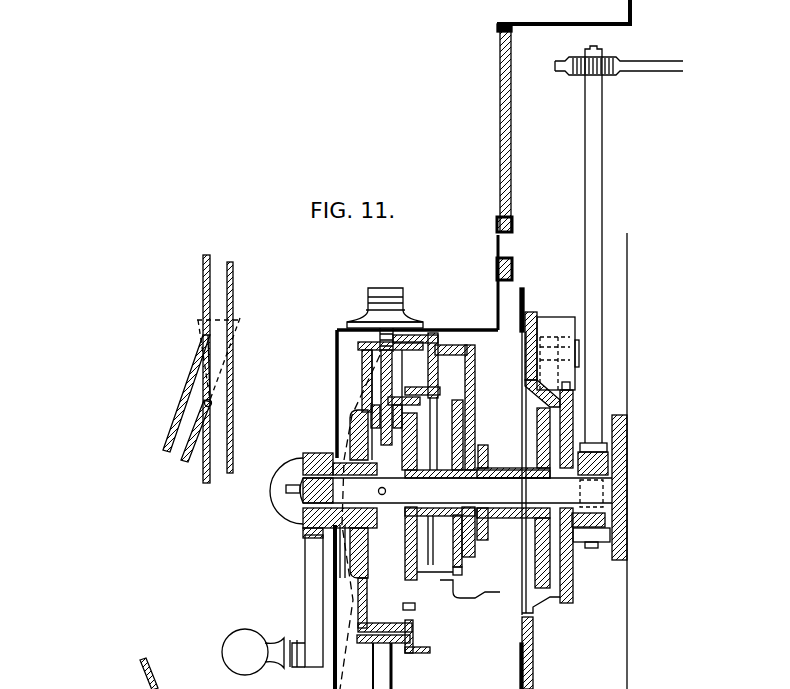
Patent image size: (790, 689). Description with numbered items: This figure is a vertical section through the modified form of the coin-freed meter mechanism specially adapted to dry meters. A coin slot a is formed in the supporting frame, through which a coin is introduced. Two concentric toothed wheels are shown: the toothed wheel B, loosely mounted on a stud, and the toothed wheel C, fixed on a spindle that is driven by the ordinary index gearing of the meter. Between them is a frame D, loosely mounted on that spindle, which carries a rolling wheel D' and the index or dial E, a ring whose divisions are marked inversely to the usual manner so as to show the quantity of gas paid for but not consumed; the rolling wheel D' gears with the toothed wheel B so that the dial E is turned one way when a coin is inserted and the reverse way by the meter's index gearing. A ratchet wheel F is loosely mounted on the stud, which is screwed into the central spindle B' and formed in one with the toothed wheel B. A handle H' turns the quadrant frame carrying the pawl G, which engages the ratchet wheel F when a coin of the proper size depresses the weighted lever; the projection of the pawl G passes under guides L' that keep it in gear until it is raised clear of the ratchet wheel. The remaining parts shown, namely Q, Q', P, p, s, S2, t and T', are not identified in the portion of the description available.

The coin slot a is at (390, 296).
The sleeve Q' is at (425, 346).
The casing Q is at (430, 515).
The pawl G is at (392, 396).
The guides L' is at (424, 387).
The index or dial E is at (522, 364).
The frame D is at (545, 343).
The rolling wheel D' is at (578, 342).
The toothed wheel C is at (571, 407).
The toothed wheel B is at (513, 498).
The central spindle B' is at (456, 492).
The nut P is at (607, 455).
The nut p is at (609, 526).
The ratchet wheel F is at (405, 551).
The handle H' is at (272, 605).
The link s is at (238, 330).
The pivot S2 is at (212, 403).
The arm t is at (176, 404).
The bar T' is at (245, 367).